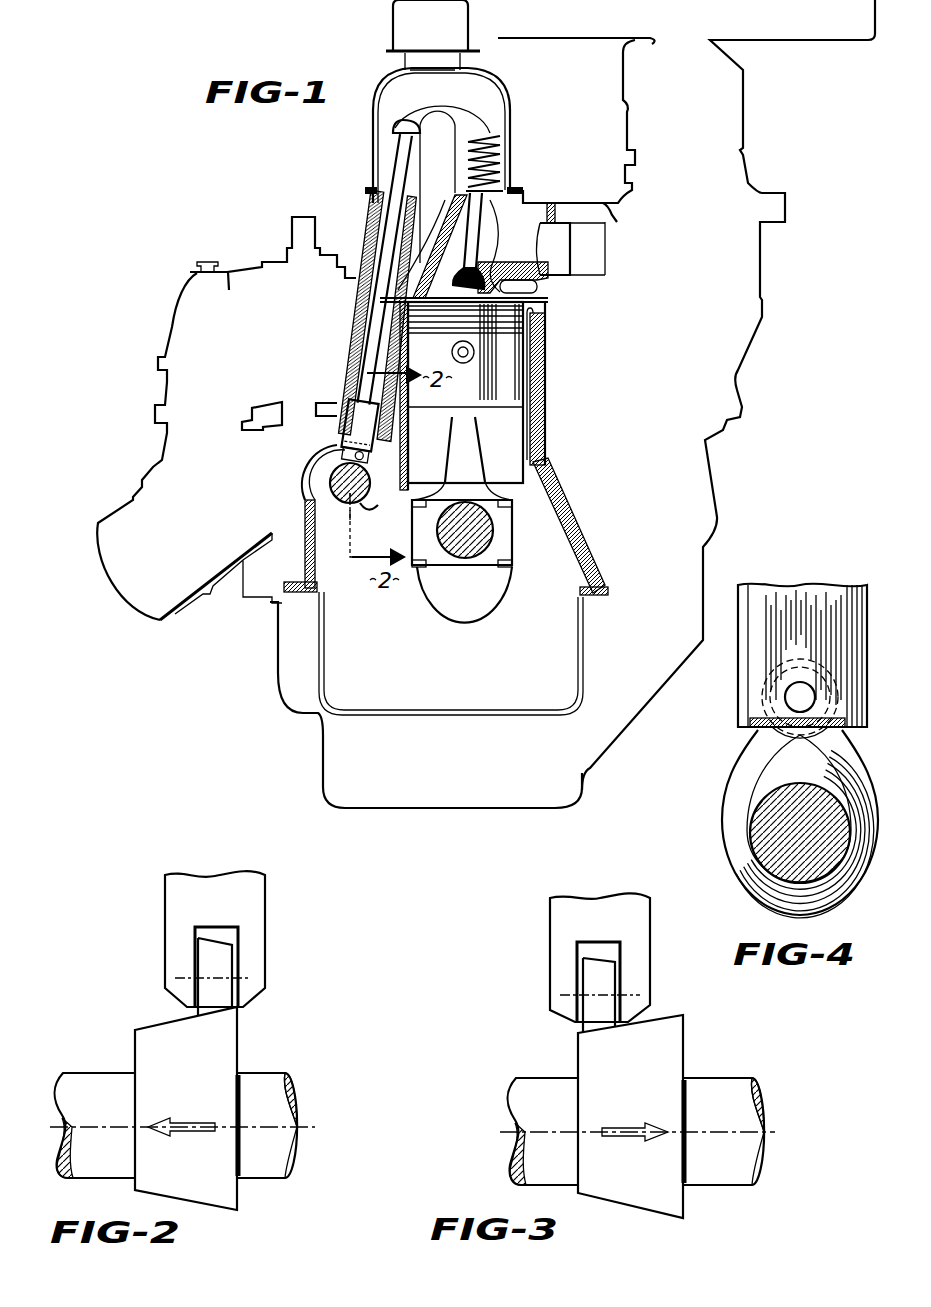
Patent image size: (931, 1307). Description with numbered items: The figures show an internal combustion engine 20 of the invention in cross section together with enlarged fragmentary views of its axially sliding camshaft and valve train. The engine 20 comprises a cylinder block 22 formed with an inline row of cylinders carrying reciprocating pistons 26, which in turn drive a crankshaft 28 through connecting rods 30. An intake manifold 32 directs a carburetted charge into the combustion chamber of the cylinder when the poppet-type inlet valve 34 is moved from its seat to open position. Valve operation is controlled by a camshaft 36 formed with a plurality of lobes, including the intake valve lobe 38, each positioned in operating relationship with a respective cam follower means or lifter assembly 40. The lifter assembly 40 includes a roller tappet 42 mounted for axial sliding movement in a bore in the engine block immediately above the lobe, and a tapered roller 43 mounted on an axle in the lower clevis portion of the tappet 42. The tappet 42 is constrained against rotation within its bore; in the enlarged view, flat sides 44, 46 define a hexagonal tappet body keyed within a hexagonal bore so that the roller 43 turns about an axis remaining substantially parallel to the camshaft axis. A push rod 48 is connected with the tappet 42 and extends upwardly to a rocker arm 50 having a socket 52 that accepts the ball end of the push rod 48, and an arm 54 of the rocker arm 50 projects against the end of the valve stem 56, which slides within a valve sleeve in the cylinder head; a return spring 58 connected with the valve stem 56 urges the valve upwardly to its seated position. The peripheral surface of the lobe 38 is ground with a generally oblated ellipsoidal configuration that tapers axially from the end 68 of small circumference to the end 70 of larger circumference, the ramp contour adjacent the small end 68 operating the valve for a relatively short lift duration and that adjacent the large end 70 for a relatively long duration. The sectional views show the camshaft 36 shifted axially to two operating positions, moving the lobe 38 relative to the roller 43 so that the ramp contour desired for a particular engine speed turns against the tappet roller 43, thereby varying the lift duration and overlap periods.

In FIG. 1, the engine 20 is at (338, 166).
In FIG. 1, the cylinder block 22 is at (548, 360).
In FIG. 1, the pistons 26 is at (525, 405).
In FIG. 1, the crankshaft 28 is at (445, 622).
In FIG. 1, the connecting rods 30 is at (470, 470).
In FIG. 1, the intake manifold 32 is at (560, 212).
In FIG. 1, the inlet valve 34 is at (472, 278).
In FIG. 1, the camshaft 36 is at (322, 480).
In FIG. 2, the camshaft 36 is at (300, 1096).
In FIG. 3, the camshaft 36 is at (768, 1102).
In FIG. 4, the camshaft 36 is at (740, 820).
In FIG. 1, the lobe 38 is at (352, 505).
In FIG. 2, the lobe 38 is at (191, 1074).
In FIG. 3, the lobe 38 is at (637, 1088).
In FIG. 4, the lobe 38 is at (745, 767).
In FIG. 1, the lifter assembly 40 is at (364, 283).
In FIG. 1, the roller tappet 42 is at (353, 417).
In FIG. 2, the roller tappet 42 is at (188, 944).
In FIG. 3, the roller tappet 42 is at (573, 970).
In FIG. 4, the roller tappet 42 is at (786, 635).
In FIG. 2, the tapered roller 43 is at (205, 1003).
In FIG. 3, the tapered roller 43 is at (585, 1022).
In FIG. 4, the tapered roller 43 is at (748, 700).
In FIG. 4, the flat side 44 is at (798, 590).
In FIG. 4, the flat side 46 is at (866, 586).
In FIG. 1, the push rod 48 is at (370, 318).
In FIG. 1, the rocker arm 50 is at (440, 103).
In FIG. 1, the socket 52 is at (394, 124).
In FIG. 1, the arm 54 is at (483, 125).
In FIG. 1, the valve stem 56 is at (518, 190).
In FIG. 1, the valve spring 58 is at (506, 162).
In FIG. 2, the small end 68 is at (134, 1060).
In FIG. 3, the small end 68 is at (578, 1068).
In FIG. 2, the large end 70 is at (240, 1063).
In FIG. 3, the large end 70 is at (686, 1065).